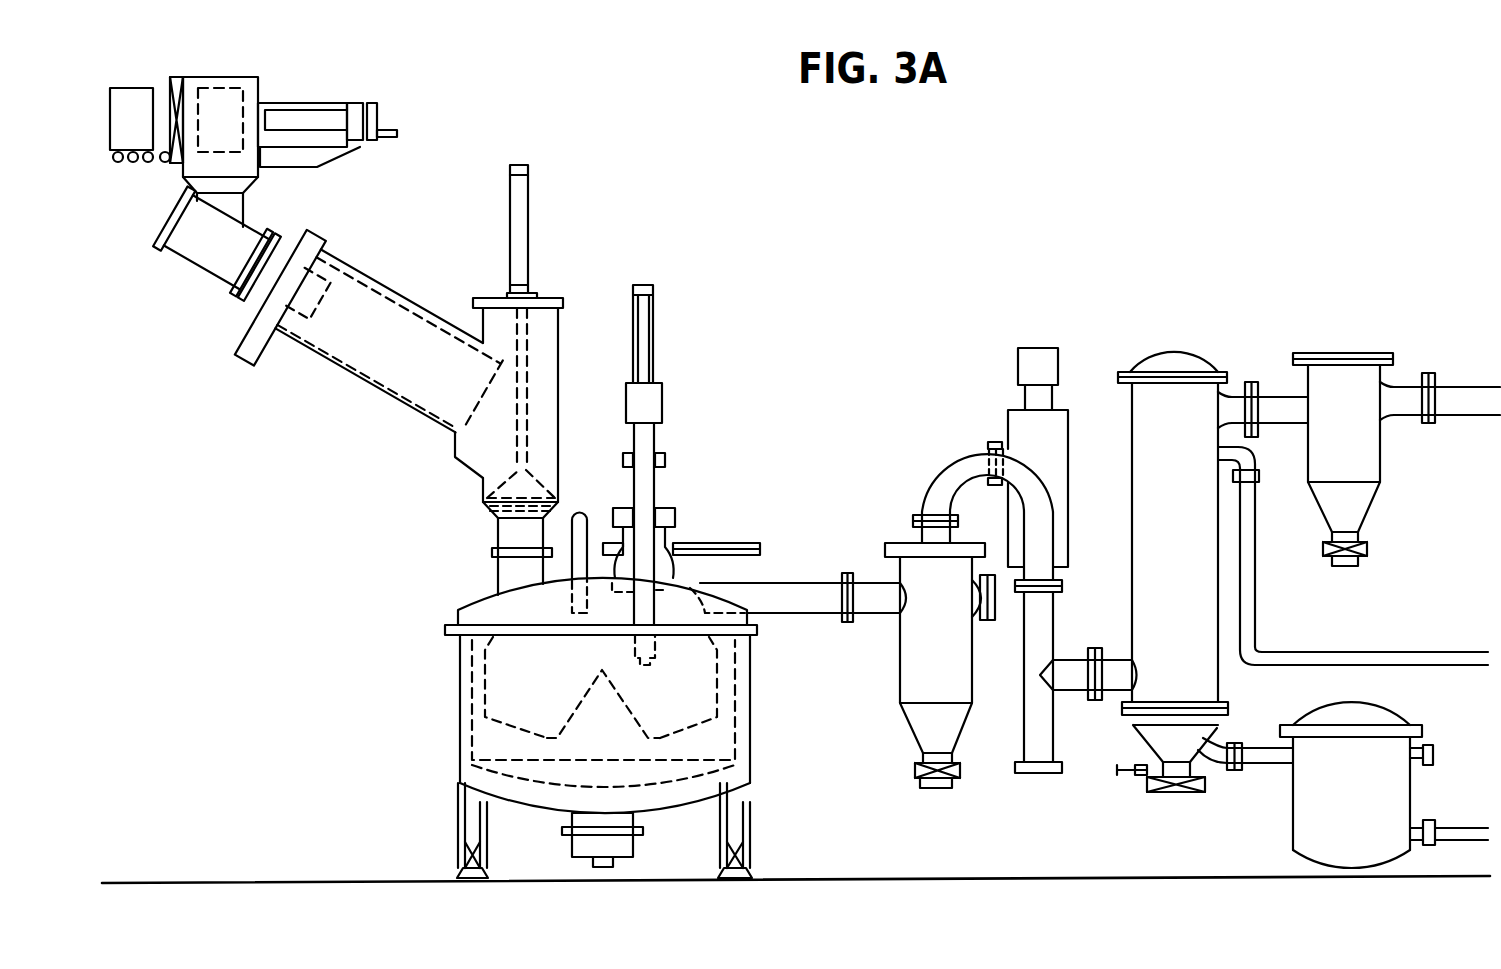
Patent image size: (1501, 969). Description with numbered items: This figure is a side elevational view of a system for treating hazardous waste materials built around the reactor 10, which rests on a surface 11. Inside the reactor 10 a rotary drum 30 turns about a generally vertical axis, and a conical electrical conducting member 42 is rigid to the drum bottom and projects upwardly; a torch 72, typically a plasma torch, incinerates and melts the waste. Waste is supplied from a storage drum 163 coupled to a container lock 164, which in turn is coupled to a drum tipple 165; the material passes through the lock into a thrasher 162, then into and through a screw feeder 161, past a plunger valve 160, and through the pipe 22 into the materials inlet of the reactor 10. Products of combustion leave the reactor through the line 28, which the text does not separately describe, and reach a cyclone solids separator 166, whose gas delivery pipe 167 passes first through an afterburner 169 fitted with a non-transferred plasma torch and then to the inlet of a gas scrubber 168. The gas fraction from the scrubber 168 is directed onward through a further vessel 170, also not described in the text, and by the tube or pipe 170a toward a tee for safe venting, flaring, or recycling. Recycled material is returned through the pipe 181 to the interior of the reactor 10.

The reactor 10 is at (752, 705).
The surface 11 is at (786, 878).
The pipe 22 is at (500, 532).
The outlet conduit 28 is at (797, 595).
The rotary drum 30 is at (486, 697).
The conical electrical conducting member 42 is at (600, 670).
The torch 72 is at (657, 642).
The plunger valve 160 is at (470, 473).
The screw feeder 161 is at (365, 367).
The thrasher 162 is at (227, 263).
The storage drum 163 is at (105, 133).
The container lock 164 is at (237, 80).
The drum tipple 165 is at (378, 112).
The cyclone solids separator 166 is at (898, 650).
The gas delivery pipe 167 is at (927, 490).
The gas scrubber 168 is at (1132, 583).
The afterburner 169 is at (1069, 460).
The secondary cyclone 170 is at (1345, 373).
The tube or pipe 170a is at (1453, 415).
The pipe 181 is at (590, 527).